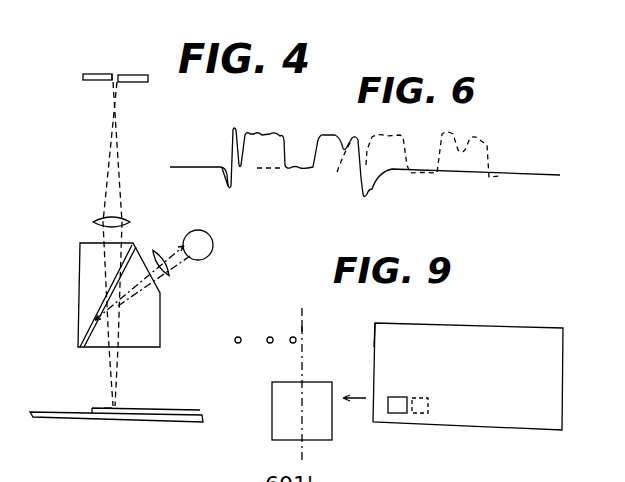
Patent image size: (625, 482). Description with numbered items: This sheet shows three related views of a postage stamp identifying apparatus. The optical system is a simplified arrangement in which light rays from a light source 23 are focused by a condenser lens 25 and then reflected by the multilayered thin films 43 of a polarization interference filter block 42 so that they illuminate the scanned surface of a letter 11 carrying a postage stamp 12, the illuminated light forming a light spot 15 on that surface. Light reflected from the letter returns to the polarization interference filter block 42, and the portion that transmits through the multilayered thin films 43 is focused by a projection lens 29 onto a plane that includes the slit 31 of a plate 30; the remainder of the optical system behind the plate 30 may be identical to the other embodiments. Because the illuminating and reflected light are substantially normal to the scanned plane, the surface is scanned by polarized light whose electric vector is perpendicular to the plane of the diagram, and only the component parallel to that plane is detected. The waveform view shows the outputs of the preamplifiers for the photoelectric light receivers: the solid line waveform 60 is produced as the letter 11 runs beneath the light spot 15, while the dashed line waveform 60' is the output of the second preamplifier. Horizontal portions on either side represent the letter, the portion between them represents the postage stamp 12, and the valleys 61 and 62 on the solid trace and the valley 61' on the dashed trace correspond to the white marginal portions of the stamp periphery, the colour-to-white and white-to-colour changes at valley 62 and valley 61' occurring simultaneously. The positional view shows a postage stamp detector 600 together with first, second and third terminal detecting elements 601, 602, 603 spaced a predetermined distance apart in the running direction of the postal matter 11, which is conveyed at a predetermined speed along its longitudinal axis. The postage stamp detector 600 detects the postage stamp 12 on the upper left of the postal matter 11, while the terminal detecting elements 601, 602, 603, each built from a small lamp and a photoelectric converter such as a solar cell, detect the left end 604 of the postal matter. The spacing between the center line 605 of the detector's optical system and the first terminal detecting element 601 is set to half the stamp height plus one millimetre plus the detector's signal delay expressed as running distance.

In FIG. 4, the slit 31 is at (112, 76).
In FIG. 4, the plate 30 is at (146, 83).
In FIG. 4, the projection lens 29 is at (137, 212).
In FIG. 4, the polarization interference filter block 42 is at (160, 333).
In FIG. 4, the multilayered thin films 43 is at (92, 313).
In FIG. 4, the light source 23 is at (210, 236).
In FIG. 4, the condenser lens 25 is at (169, 278).
In FIG. 4, the light spot 15 is at (106, 408).
In FIG. 4, the postage stamp 12 is at (168, 410).
In FIG. 9, the postage stamp 12 is at (416, 414).
In FIG. 4, the letter 11 is at (177, 423).
In FIG. 9, the letter 11 is at (518, 338).
In FIG. 6, the solid line waveform 60 is at (365, 162).
In FIG. 6, the valley 61 is at (208, 186).
In FIG. 6, the dashed line waveform 60' is at (270, 186).
In FIG. 6, the valley 61' is at (333, 173).
In FIG. 6, the valley 62 is at (373, 188).
In FIG. 9, the postage stamp detector 600 is at (320, 382).
In FIG. 9, the first terminal detecting element 601 is at (293, 337).
In FIG. 9, the second terminal detecting element 602 is at (269, 343).
In FIG. 9, the third terminal detecting element 603 is at (238, 337).
In FIG. 9, the left end of the postal matter 604 is at (375, 347).
In FIG. 9, the center line 605 is at (307, 327).